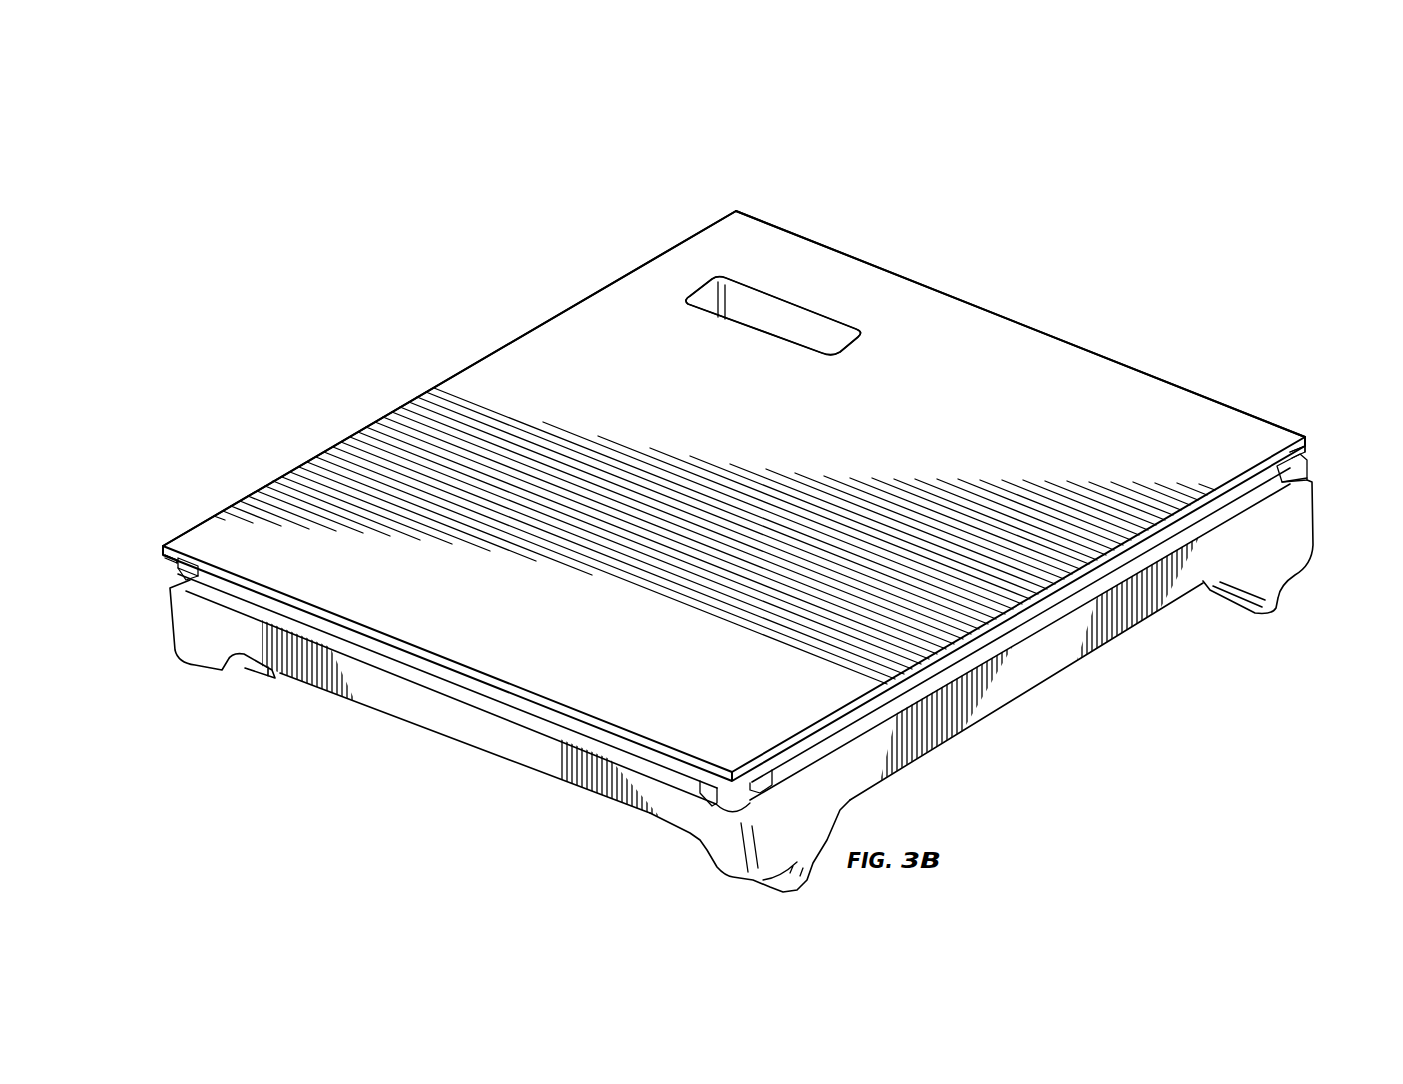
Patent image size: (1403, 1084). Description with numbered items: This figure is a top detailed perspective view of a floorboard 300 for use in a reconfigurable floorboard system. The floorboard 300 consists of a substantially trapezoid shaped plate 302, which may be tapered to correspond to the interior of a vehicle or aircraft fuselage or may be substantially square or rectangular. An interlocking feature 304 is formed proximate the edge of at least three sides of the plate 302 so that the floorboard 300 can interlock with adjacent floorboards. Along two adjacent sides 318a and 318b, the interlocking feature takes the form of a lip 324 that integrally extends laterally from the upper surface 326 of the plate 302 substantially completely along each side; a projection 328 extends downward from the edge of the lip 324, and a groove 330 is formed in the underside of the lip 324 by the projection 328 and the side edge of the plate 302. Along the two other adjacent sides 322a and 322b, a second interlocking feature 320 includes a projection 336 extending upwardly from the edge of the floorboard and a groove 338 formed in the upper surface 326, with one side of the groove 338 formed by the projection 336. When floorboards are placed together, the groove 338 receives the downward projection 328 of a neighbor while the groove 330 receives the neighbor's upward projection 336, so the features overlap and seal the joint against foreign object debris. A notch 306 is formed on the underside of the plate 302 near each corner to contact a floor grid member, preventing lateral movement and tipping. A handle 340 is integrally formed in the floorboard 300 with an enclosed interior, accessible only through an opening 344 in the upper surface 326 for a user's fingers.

The floorboard 300 is at (734, 466).
The plate 302 is at (957, 328).
The interlocking feature 304 is at (150, 565).
The notch 306 is at (782, 890).
The side 318a is at (572, 305).
The side 318b is at (1068, 336).
The second interlocking feature 320 is at (407, 691).
The side 322a is at (540, 735).
The side 322b is at (985, 668).
The lip 324 is at (166, 553).
The upper surface 326 is at (1028, 450).
The projection 328 is at (168, 568).
The groove 330 is at (175, 586).
The projection 336 is at (745, 800).
The groove 338 is at (350, 635).
The handle 340 is at (750, 339).
The opening 344 is at (768, 312).